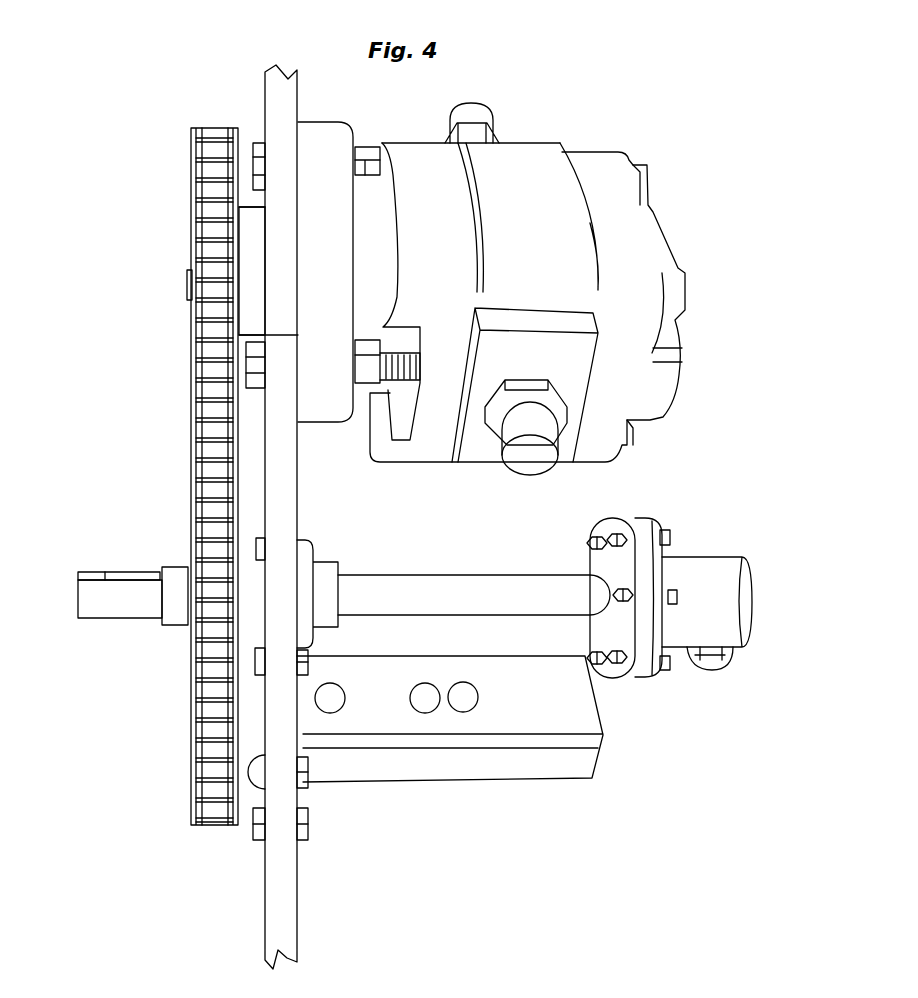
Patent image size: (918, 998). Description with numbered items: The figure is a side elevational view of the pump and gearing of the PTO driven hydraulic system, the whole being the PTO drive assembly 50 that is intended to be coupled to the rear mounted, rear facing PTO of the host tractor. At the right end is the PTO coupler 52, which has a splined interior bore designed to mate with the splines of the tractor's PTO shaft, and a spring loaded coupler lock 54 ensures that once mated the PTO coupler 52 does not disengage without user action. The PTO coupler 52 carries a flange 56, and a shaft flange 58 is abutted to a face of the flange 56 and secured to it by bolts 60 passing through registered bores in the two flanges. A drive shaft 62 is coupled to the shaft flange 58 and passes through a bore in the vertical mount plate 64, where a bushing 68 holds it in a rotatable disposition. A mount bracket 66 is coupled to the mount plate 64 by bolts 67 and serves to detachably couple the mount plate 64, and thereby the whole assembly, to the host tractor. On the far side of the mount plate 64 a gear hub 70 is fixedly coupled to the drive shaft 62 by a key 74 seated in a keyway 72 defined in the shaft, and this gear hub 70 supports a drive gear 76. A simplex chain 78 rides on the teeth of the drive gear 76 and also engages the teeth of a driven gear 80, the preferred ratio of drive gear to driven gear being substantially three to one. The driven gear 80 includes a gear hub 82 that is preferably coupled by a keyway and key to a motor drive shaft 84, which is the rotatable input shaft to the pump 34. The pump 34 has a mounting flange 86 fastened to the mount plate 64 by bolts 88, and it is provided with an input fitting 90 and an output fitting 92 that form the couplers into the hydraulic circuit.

The pump 34 is at (663, 398).
The PTO drive assembly 50 is at (112, 252).
The PTO coupler 52 is at (735, 575).
The spring loaded coupler lock 54 is at (710, 660).
The flange 56 is at (645, 680).
The shaft flange 58 is at (608, 680).
The bolts 60 is at (670, 597).
The drive shaft 62 is at (440, 575).
The mount plate 64 is at (290, 870).
The mount bracket 66 is at (520, 770).
The bolts 67 is at (305, 665).
The bushing 68 is at (330, 563).
The gear hub 70 is at (175, 570).
The keyway 72 is at (105, 575).
The key 74 is at (118, 600).
The drive gear 76 is at (191, 678).
The simplex chain 78 is at (191, 412).
The driven gear 80 is at (208, 277).
The gear hub 82 is at (245, 235).
The motor drive shaft 84 is at (186, 285).
The mounting flange 86 is at (329, 135).
The bolts 88 is at (259, 150).
The input fitting 90 is at (470, 108).
The output fitting 92 is at (545, 430).